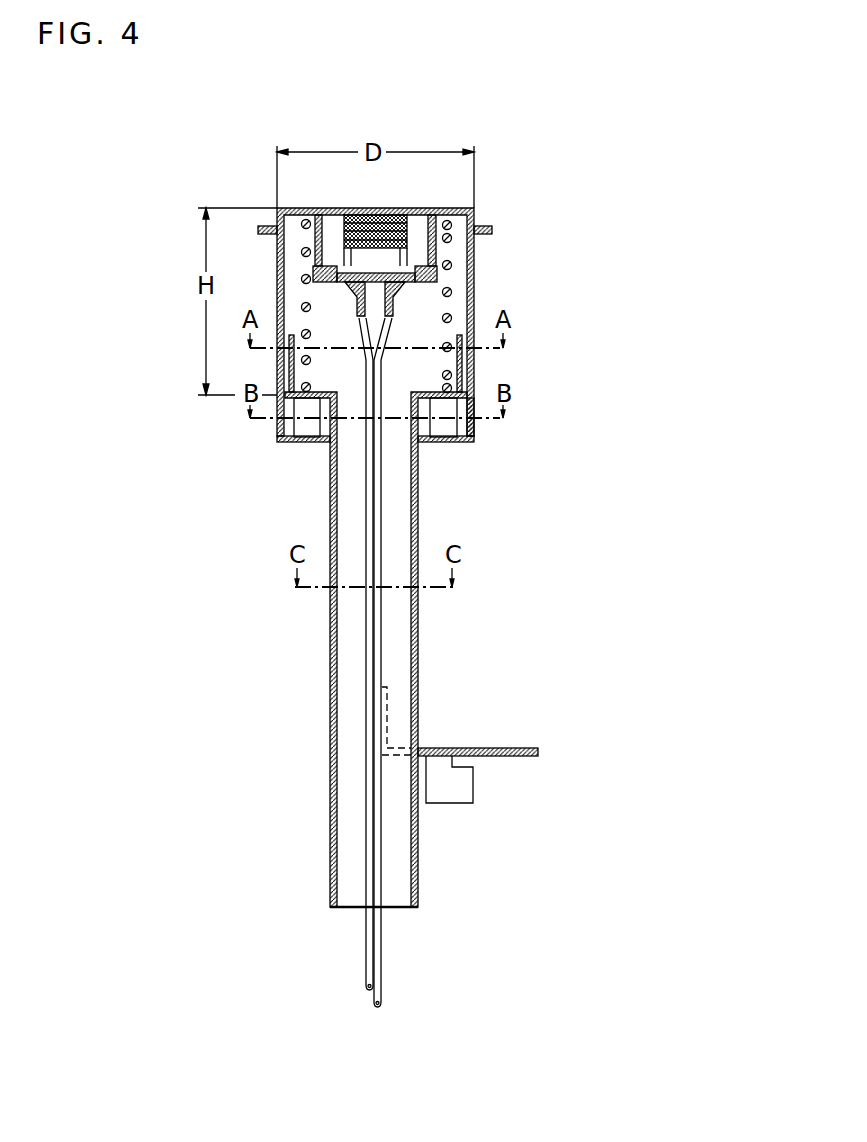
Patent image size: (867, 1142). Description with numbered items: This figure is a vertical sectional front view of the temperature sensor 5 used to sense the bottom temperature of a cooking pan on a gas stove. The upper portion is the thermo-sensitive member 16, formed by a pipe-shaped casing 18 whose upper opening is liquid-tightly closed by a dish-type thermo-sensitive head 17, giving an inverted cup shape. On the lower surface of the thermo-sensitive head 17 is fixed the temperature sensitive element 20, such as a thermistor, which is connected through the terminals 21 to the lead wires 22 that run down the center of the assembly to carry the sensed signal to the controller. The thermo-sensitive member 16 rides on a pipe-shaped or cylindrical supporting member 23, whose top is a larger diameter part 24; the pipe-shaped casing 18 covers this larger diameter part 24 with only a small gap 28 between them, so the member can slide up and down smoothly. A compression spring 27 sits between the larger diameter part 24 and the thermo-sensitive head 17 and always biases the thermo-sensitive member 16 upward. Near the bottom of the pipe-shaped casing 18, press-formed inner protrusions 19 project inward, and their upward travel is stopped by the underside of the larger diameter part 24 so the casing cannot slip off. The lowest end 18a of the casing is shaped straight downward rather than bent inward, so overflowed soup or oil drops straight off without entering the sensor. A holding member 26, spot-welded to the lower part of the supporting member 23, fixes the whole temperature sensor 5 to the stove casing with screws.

The temperature sensor 5 is at (474, 432).
The thermo-sensitive member 16 is at (412, 322).
The thermo-sensitive head 17 is at (430, 209).
The pipe-shaped casing 18 is at (278, 287).
The lowest end of the pipe-shaped casing 18a is at (280, 442).
The inner protrusions 19 is at (305, 440).
The temperature sensitive element 20 is at (407, 238).
The terminals 21 is at (403, 290).
The lead wires 22 is at (377, 537).
The supporting member 23 is at (418, 635).
The larger diameter part 24 is at (463, 372).
The holding member 26 is at (497, 757).
The compression spring 27 is at (452, 318).
The small gap 28 is at (290, 372).